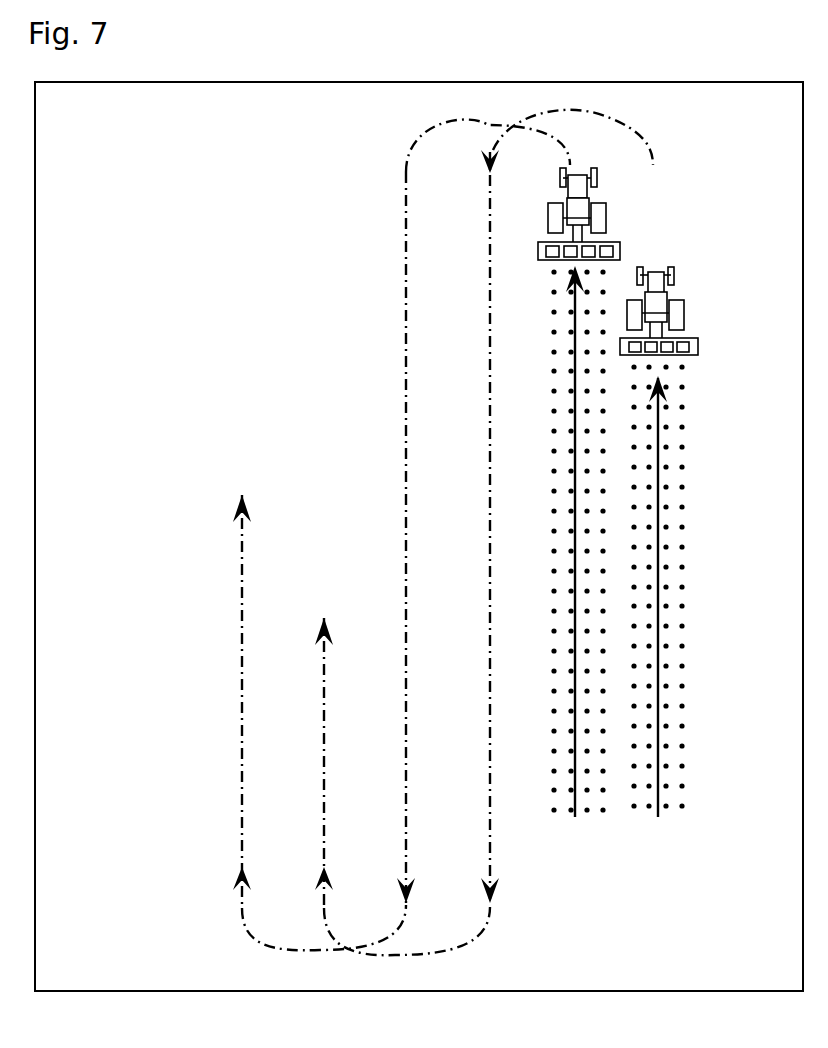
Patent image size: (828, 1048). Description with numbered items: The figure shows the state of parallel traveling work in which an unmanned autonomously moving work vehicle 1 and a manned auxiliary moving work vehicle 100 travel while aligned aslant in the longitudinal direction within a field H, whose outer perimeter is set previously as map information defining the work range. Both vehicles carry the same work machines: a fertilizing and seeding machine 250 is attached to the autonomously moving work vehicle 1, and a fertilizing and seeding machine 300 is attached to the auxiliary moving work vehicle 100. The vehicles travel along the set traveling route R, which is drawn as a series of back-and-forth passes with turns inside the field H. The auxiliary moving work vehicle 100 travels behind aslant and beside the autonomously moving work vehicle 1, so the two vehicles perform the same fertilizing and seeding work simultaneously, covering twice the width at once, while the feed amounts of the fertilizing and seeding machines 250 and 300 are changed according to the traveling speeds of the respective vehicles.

The autonomously moving work vehicle 1 is at (641, 183).
The fertilizing and seeding machine 250 is at (626, 240).
The auxiliary moving work vehicle 100 is at (701, 280).
The fertilizing and seeding machine 300 is at (705, 342).
The field H is at (273, 157).
The traveling route R is at (240, 638).